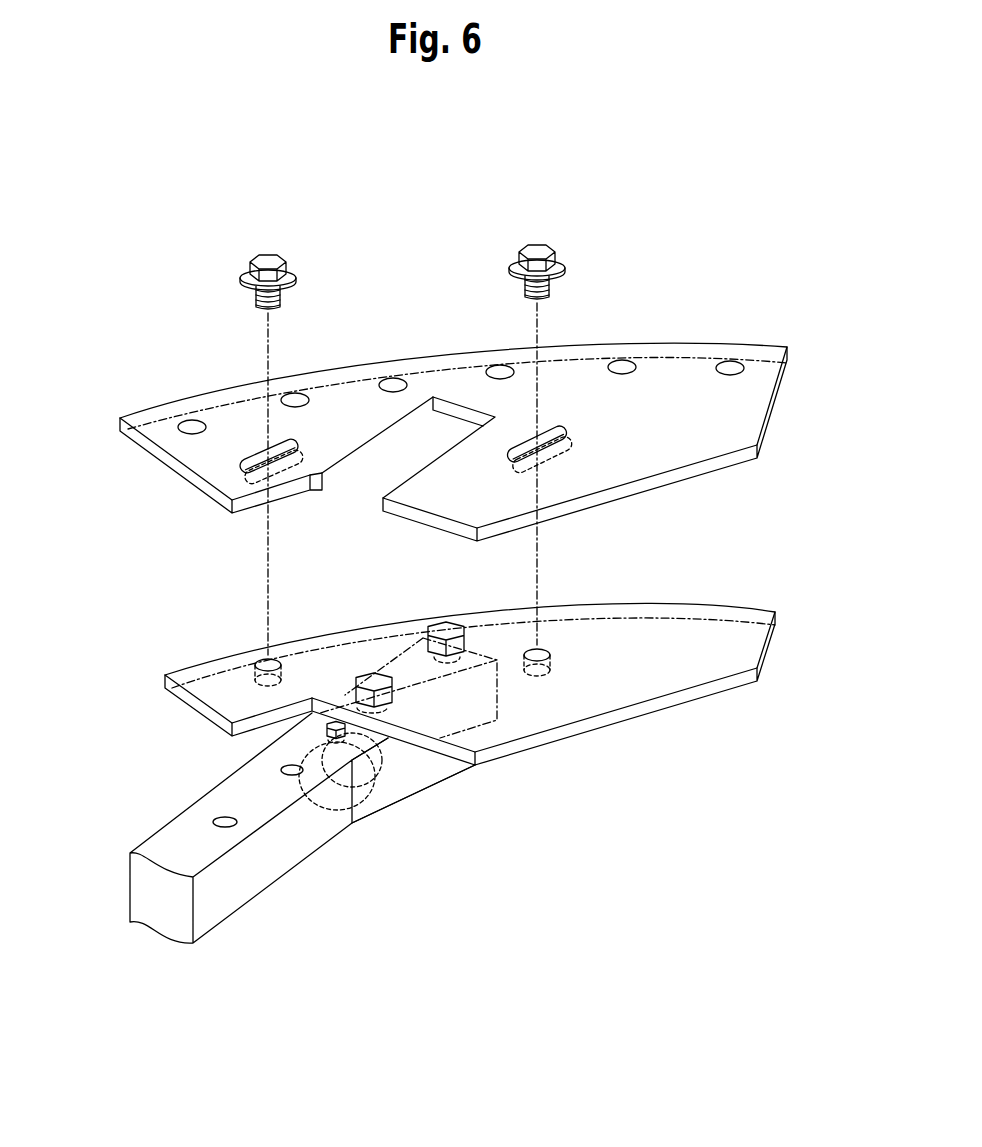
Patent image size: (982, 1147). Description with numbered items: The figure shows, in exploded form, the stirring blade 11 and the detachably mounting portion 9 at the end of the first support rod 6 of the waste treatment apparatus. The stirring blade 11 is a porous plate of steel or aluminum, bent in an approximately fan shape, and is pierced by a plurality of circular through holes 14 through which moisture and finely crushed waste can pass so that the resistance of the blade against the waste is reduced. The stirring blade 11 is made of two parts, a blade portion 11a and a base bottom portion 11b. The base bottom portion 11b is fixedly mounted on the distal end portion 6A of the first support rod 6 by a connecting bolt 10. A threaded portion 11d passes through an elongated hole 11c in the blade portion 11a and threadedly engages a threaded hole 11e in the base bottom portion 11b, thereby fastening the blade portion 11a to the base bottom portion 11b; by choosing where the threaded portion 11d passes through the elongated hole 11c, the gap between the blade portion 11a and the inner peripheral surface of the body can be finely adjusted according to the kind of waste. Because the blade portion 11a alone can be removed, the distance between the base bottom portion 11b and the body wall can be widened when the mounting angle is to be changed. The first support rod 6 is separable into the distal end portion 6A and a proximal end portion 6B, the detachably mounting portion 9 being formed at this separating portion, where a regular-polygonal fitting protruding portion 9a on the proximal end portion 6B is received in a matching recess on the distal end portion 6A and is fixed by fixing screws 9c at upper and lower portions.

The first support rod 6 is at (300, 843).
The distal end portion 6A is at (420, 762).
The proximal end portion 6B is at (250, 877).
The detachably mounting portion 9 is at (398, 731).
The fitting protruding portion 9a is at (358, 782).
The fixing screw 9c is at (336, 720).
The connecting bolt 10 is at (373, 675).
The stirring blade 11 is at (690, 337).
The blade portion 11a is at (707, 462).
The base bottom portion 11b is at (668, 702).
The elongated hole 11c is at (246, 459).
The threaded portion 11d is at (266, 254).
The threaded hole 11e is at (268, 655).
The through hole 14 is at (393, 378).